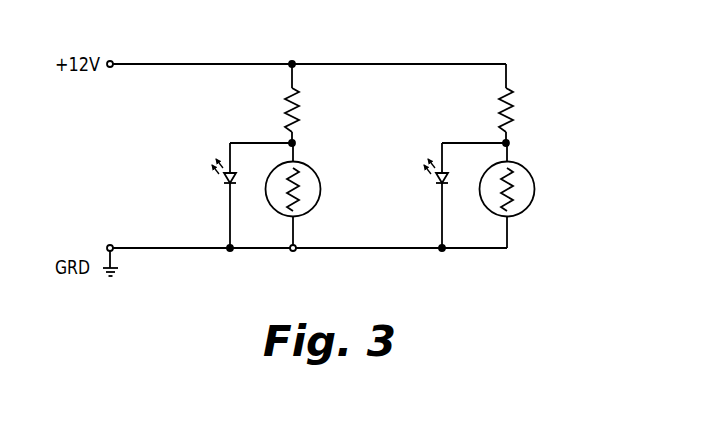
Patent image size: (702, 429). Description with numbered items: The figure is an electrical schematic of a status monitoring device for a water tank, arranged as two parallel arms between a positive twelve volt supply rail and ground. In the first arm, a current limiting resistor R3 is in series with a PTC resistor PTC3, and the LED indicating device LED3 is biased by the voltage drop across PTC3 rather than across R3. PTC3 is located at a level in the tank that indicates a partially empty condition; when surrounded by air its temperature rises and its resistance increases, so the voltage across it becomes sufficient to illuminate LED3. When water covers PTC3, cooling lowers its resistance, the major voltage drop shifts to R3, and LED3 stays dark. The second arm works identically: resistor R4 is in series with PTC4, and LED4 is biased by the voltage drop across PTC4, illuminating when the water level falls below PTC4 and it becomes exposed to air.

The current limiting resistor R3 is at (306, 103).
The current limiting resistor R4 is at (520, 103).
The LED indicating device LED3 is at (208, 195).
The LED indicating device LED4 is at (420, 195).
The PTC resistor PTC3 is at (316, 194).
The PTC resistor PTC4 is at (529, 195).